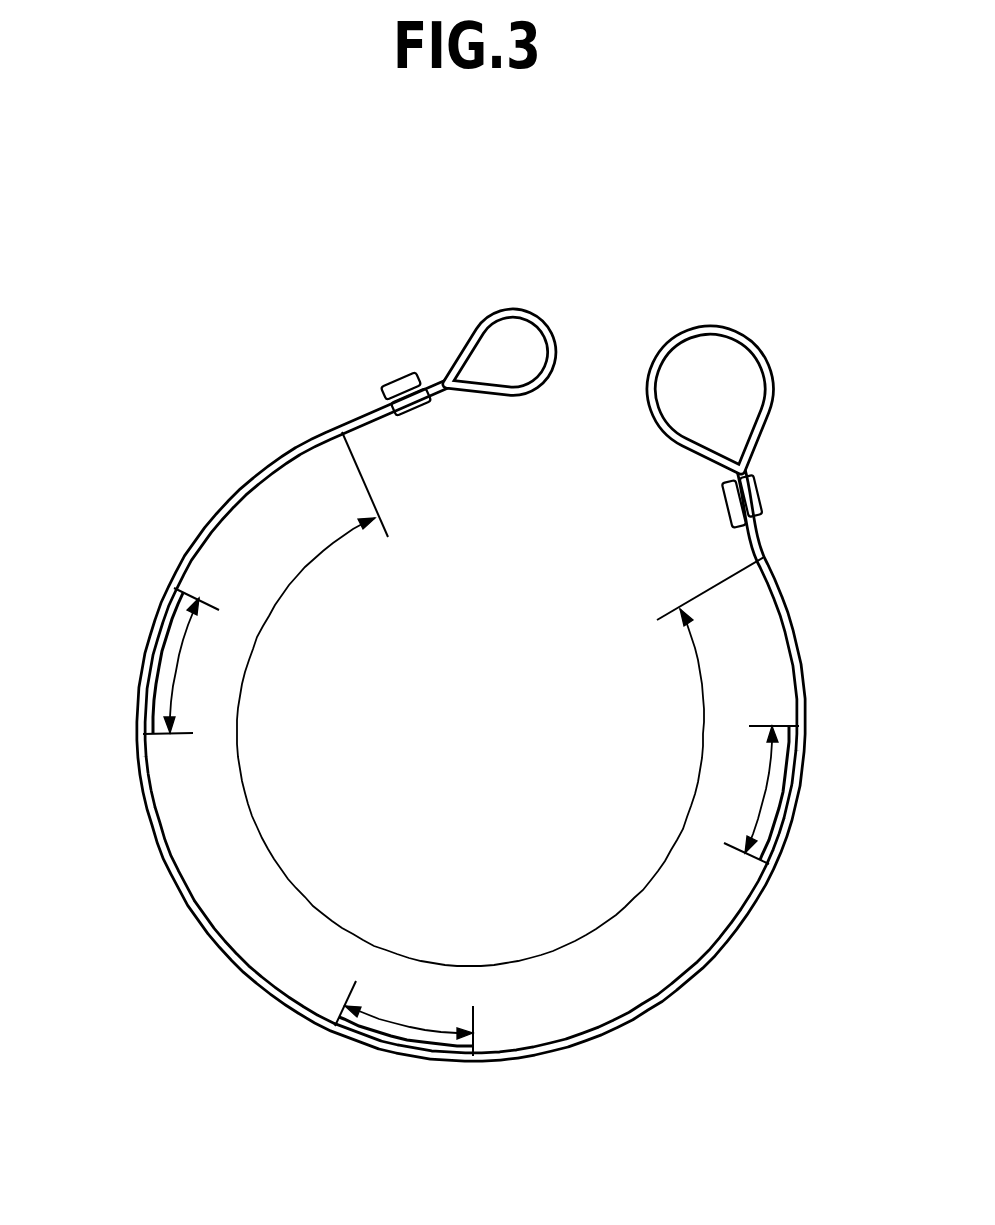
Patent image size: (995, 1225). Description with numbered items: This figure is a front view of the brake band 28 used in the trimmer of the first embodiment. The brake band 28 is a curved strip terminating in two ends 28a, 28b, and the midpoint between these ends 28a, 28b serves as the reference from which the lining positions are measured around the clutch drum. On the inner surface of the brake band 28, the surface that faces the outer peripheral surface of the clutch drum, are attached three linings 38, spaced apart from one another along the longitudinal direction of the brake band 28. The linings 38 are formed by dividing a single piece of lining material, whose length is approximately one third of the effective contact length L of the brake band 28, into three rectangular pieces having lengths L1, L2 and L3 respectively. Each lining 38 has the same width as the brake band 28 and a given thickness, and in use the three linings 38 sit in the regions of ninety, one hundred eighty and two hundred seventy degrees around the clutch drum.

The brake band 28 is at (652, 1017).
The end of brake band 28a is at (710, 330).
The end of brake band 28b is at (512, 306).
The lining 38 is at (158, 660).
The effective contact length of brake band L is at (305, 872).
The length of first lining L1 is at (760, 835).
The length of second lining L2 is at (385, 1013).
The length of third lining L3 is at (172, 690).